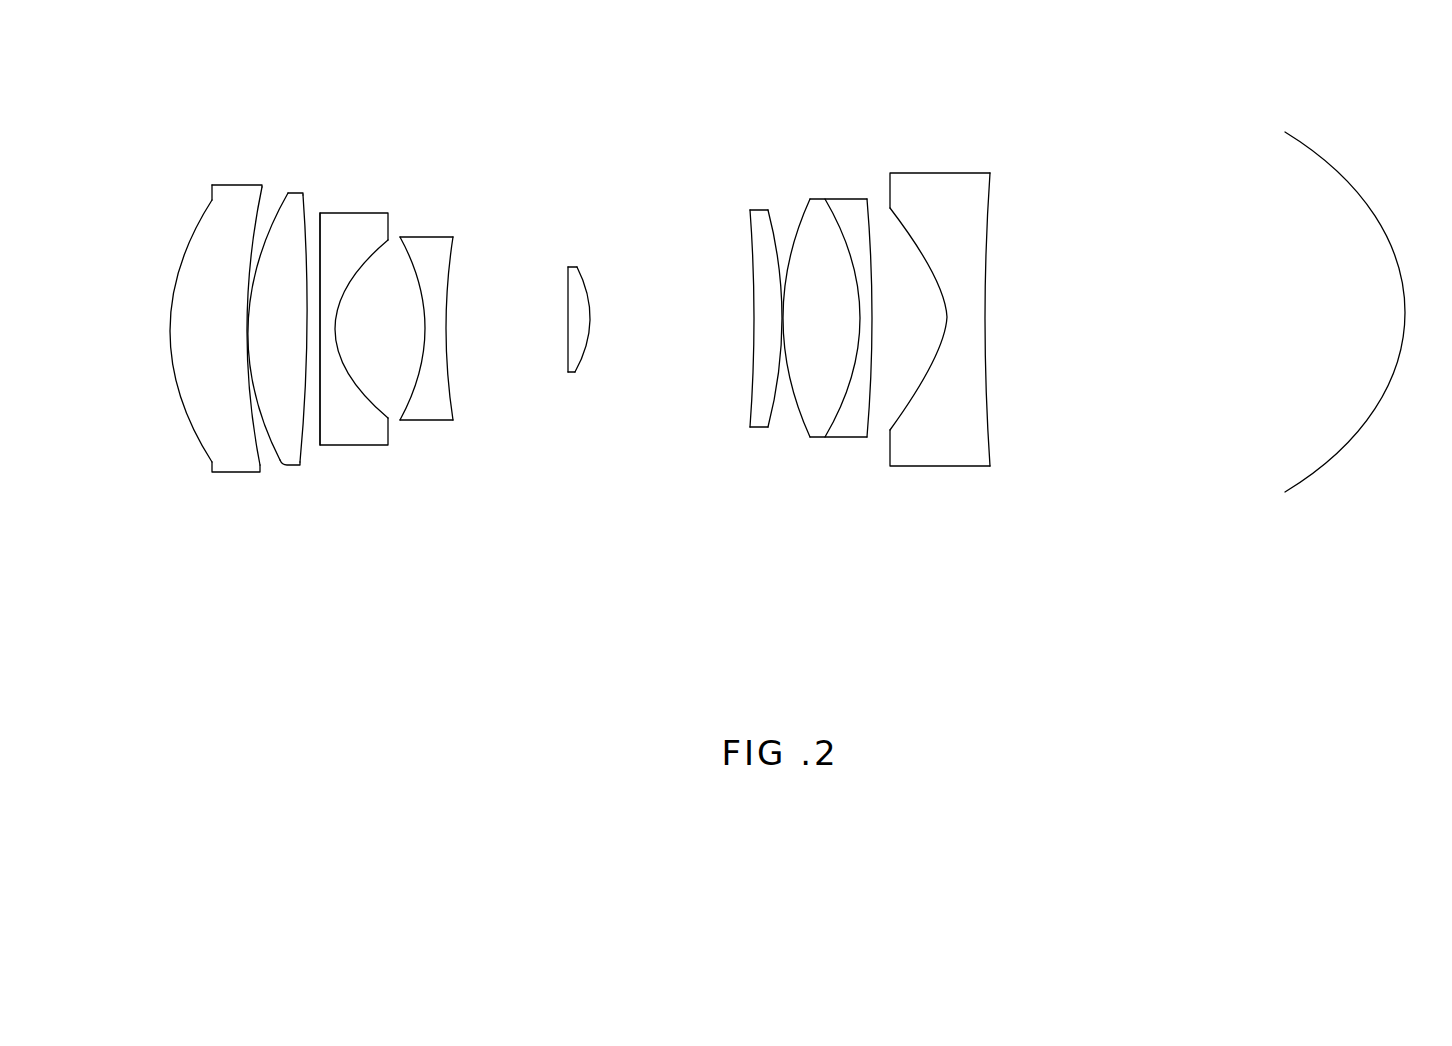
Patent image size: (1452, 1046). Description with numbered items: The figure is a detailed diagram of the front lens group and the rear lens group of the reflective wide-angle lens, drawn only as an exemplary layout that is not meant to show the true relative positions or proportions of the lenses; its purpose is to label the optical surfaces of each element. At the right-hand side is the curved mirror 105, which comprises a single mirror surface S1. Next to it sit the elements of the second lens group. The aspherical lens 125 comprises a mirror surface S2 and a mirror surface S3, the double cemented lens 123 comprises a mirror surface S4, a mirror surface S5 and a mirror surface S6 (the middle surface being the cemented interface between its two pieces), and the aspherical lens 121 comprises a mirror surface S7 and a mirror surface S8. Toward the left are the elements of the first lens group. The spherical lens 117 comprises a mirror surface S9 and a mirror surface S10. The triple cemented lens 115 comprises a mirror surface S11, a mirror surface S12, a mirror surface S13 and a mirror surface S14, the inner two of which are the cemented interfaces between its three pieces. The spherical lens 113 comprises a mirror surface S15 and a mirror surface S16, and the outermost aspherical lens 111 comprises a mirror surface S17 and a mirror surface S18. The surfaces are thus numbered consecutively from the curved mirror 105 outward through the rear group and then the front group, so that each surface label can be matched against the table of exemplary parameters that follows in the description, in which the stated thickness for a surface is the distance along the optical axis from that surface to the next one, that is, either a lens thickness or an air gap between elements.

The curved mirror 105 is at (1315, 362).
The aspherical lens 111 is at (228, 363).
The spherical lens 113 is at (295, 363).
The triple cemented lens 115 is at (397, 379).
The spherical lens 117 is at (576, 404).
The aspherical lens 121 is at (754, 363).
The double cemented lens 123 is at (830, 363).
The aspherical lens 125 is at (935, 363).
The mirror surface S1 is at (1304, 463).
The mirror surface S2 is at (994, 192).
The mirror surface S3 is at (886, 446).
The mirror surface S4 is at (870, 214).
The mirror surface S5 is at (832, 422).
The mirror surface S6 is at (794, 218).
The mirror surface S7 is at (771, 420).
The mirror surface S8 is at (748, 220).
The mirror surface S9 is at (592, 300).
The mirror surface S10 is at (567, 354).
The mirror surface S11 is at (455, 278).
The mirror surface S12 is at (407, 399).
The mirror surface S13 is at (365, 257).
The mirror surface S14 is at (318, 444).
The mirror surface S15 is at (305, 200).
The mirror surface S16 is at (277, 456).
The mirror surface S17 is at (264, 200).
The mirror surface S18 is at (197, 225).